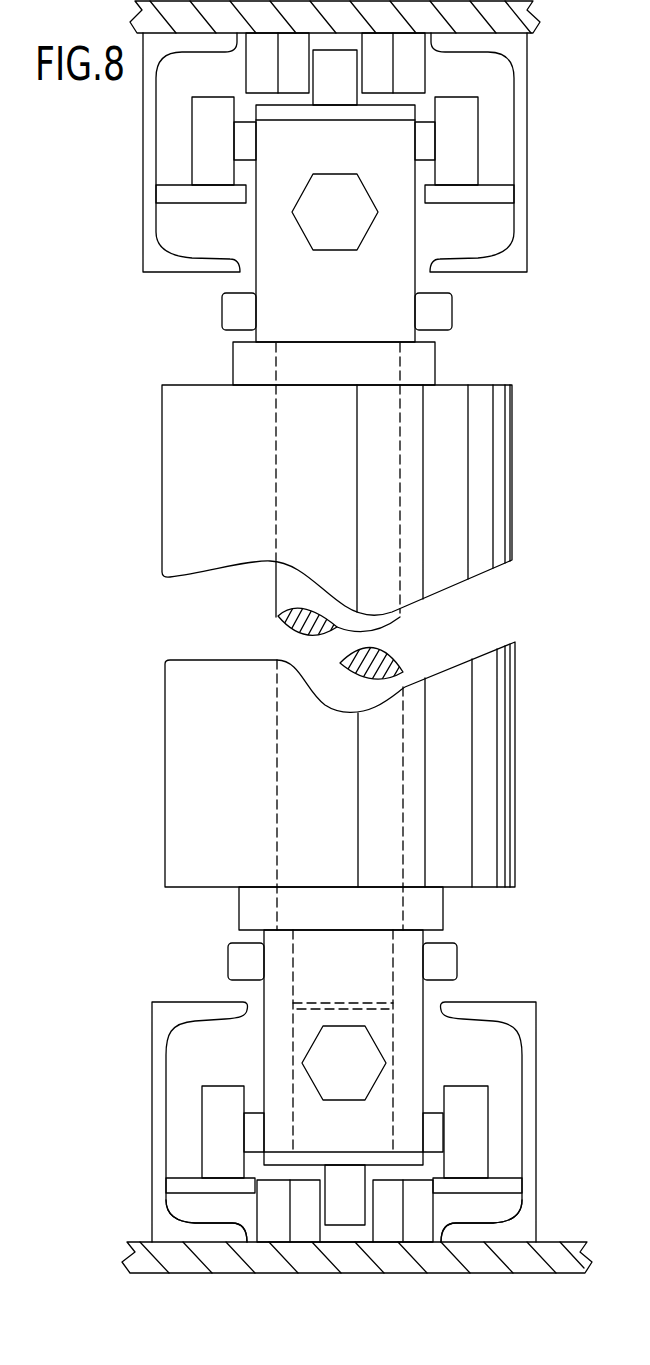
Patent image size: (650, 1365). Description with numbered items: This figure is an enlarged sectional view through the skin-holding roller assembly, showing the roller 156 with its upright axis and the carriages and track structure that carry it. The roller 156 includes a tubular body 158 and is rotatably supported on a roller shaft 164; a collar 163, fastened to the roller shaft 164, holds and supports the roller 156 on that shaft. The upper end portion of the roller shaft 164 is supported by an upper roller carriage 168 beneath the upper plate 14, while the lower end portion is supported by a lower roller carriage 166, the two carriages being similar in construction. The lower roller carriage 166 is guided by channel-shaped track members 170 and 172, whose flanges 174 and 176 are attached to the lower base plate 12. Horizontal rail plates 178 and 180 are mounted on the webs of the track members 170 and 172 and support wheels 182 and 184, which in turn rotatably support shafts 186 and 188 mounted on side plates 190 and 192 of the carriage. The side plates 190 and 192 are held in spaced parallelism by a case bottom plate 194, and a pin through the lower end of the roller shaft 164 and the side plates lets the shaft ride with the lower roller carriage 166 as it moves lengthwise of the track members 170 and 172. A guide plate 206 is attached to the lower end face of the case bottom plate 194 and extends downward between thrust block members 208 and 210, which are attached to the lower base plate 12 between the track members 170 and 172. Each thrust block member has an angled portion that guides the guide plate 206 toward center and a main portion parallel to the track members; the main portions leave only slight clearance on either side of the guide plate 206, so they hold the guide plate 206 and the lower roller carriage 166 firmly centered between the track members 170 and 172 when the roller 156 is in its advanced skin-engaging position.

The upper mounting plate 14 is at (512, 14).
The lower base plate 12 is at (560, 1258).
The upper roller carriage 168 is at (418, 230).
The tubular body 158 is at (445, 565).
The roller shaft 164 is at (392, 692).
The roller 156 is at (520, 755).
The collar 163 is at (422, 908).
The lower roller carriage 166 is at (428, 1045).
The side plate 190 is at (393, 1110).
The side plate 192 is at (293, 1128).
The track member 172 is at (155, 1090).
The track member 170 is at (530, 1100).
The shaft 188 is at (248, 1120).
The shaft 186 is at (435, 1120).
The wheel 184 is at (214, 1125).
The wheel 182 is at (470, 1128).
The horizontal rail plate 180 is at (192, 1185).
The horizontal rail plate 178 is at (500, 1185).
The flange 176 is at (210, 1232).
The flange 174 is at (487, 1232).
The case bottom plate 194 is at (280, 1160).
The thrust block member 210 is at (437, 1250).
The guide plate 206 is at (355, 1205).
The thrust block member 208 is at (312, 1250).